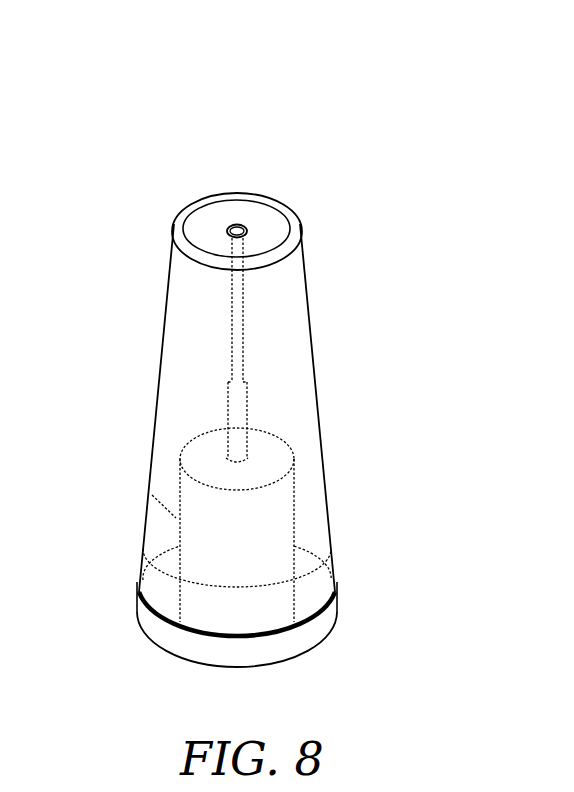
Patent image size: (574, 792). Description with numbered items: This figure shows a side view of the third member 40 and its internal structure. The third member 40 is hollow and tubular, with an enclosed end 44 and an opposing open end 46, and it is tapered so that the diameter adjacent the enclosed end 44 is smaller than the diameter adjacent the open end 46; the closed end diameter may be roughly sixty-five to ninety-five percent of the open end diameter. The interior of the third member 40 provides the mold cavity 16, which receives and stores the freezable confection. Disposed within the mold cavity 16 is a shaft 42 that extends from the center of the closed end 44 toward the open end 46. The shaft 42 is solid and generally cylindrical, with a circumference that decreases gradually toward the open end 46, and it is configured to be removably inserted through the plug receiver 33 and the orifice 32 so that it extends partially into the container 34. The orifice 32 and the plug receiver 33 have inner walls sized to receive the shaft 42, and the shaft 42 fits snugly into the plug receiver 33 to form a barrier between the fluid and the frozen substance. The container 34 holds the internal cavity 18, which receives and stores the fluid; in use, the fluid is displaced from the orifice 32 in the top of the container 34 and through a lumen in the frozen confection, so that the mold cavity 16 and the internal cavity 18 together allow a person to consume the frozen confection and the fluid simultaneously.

The third member 40 is at (333, 108).
The enclosed end 44 is at (294, 213).
The shaft 42 is at (232, 287).
The plug receiver 33 is at (226, 400).
The orifice 32 is at (292, 458).
The internal cavity 18 is at (270, 506).
The mold cavity 16 is at (168, 510).
The container 34 is at (332, 548).
The open end 46 is at (323, 641).